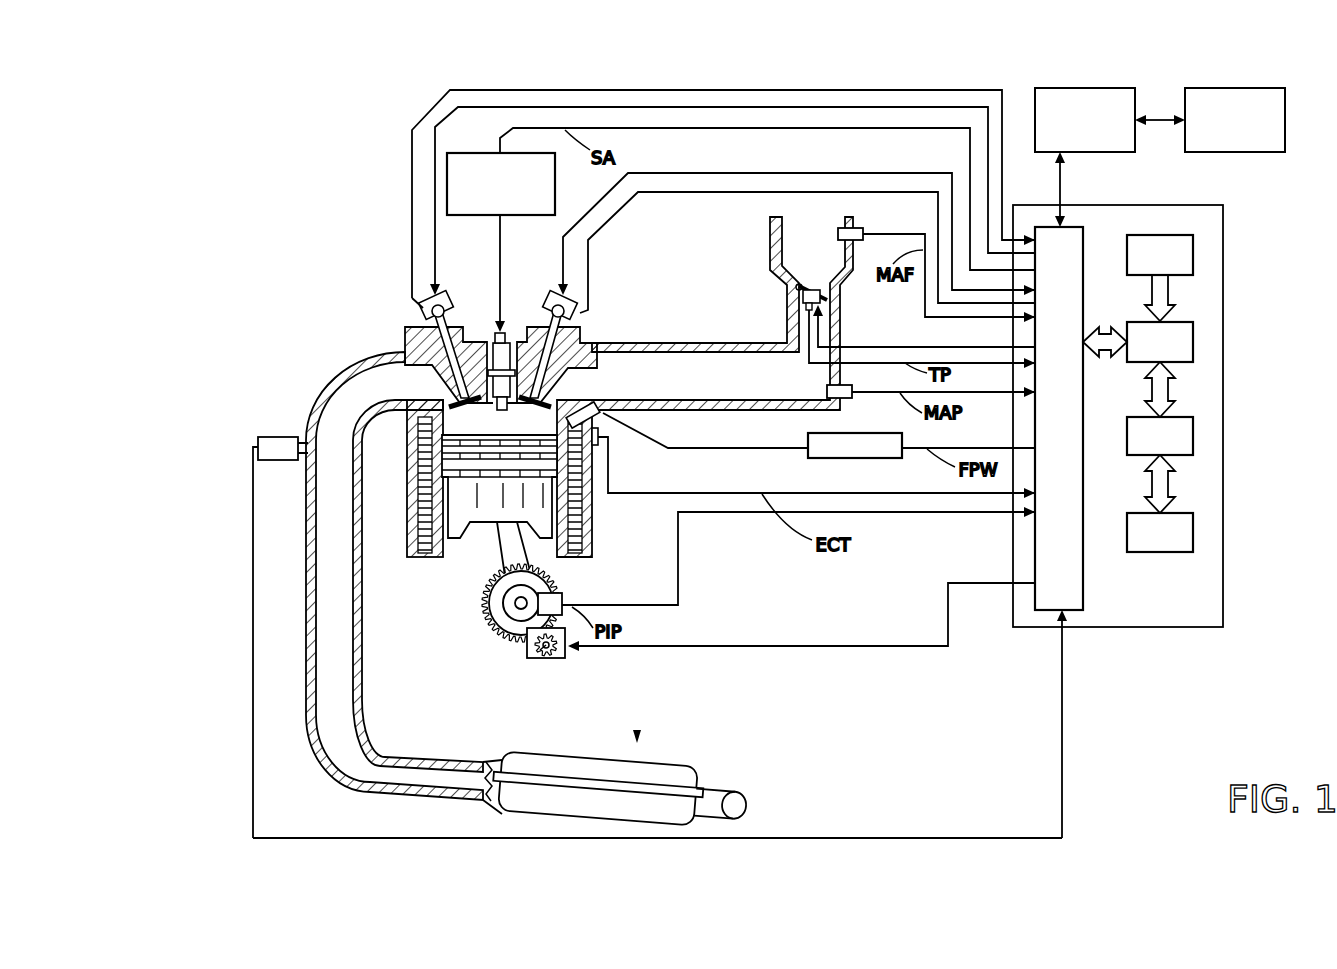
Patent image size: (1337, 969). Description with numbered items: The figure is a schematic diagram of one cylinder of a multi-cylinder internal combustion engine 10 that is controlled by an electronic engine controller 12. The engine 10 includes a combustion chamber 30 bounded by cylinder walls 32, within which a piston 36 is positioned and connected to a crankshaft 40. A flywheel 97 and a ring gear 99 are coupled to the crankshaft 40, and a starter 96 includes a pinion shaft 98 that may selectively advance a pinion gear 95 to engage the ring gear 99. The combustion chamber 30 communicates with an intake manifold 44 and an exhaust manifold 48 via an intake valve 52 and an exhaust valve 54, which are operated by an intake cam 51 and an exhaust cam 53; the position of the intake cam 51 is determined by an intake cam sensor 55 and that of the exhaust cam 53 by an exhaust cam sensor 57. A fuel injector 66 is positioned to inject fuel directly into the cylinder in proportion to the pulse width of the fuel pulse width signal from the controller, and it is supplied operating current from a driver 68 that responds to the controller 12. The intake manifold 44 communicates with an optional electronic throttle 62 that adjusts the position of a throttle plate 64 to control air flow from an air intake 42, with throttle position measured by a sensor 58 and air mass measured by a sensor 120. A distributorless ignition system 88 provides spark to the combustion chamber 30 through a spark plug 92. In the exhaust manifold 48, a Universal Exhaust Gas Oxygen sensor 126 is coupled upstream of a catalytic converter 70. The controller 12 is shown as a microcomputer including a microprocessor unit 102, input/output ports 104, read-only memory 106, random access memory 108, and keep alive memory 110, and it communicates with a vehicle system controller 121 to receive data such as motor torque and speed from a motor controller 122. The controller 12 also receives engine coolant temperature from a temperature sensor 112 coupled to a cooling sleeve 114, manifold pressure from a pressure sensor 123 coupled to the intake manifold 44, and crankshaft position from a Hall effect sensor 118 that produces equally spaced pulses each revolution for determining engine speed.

The internal combustion engine 10 is at (340, 282).
The electronic engine controller 12 is at (1213, 206).
The combustion chamber 30 is at (497, 418).
The cylinder walls 32 is at (442, 562).
The piston 36 is at (480, 548).
The crankshaft 40 is at (500, 632).
The air intake 42 is at (801, 262).
The intake manifold 44 is at (741, 388).
The exhaust manifold 48 is at (366, 393).
The intake cam 51 is at (556, 292).
The intake valve 52 is at (560, 386).
The exhaust cam 53 is at (445, 292).
The exhaust valve 54 is at (406, 363).
The intake cam sensor 55 is at (572, 313).
The exhaust cam sensor 57 is at (426, 312).
The throttle position sensor 58 is at (802, 302).
The electronic throttle 62 is at (830, 290).
The throttle plate 64 is at (796, 289).
The fuel injector 66 is at (613, 420).
The driver 68 is at (833, 458).
The catalytic converter 70 is at (515, 752).
The distributorless ignition system 88 is at (462, 153).
The spark plug 92 is at (503, 340).
The pinion gear 95 is at (556, 655).
The starter 96 is at (562, 655).
The flywheel 97 is at (495, 603).
The pinion shaft 98 is at (543, 658).
The ring gear 99 is at (515, 642).
The microprocessor unit 102 is at (1193, 340).
The input/output ports 104 is at (1085, 235).
The read-only memory 106 is at (1193, 252).
The random access memory 108 is at (1193, 432).
The keep alive memory 110 is at (1193, 527).
The temperature sensor 112 is at (605, 440).
The cooling sleeve 114 is at (585, 515).
The Hall effect sensor 118 is at (565, 592).
The air mass sensor 120 is at (855, 228).
The vehicle system controller 121 is at (1110, 157).
The motor controller 122 is at (1235, 120).
The pressure sensor 123 is at (845, 398).
The Universal Exhaust Gas Oxygen sensor 126 is at (258, 440).